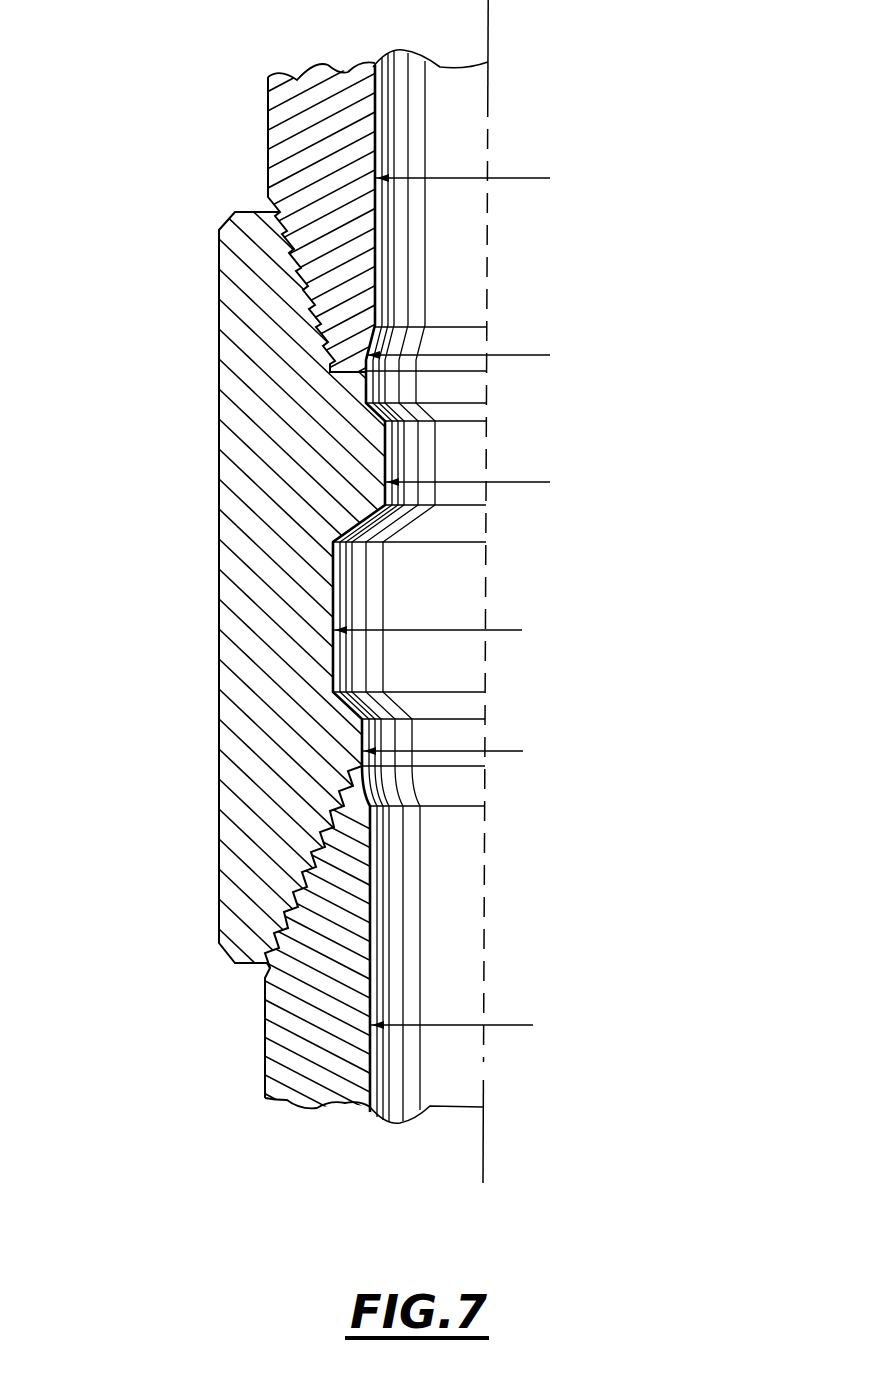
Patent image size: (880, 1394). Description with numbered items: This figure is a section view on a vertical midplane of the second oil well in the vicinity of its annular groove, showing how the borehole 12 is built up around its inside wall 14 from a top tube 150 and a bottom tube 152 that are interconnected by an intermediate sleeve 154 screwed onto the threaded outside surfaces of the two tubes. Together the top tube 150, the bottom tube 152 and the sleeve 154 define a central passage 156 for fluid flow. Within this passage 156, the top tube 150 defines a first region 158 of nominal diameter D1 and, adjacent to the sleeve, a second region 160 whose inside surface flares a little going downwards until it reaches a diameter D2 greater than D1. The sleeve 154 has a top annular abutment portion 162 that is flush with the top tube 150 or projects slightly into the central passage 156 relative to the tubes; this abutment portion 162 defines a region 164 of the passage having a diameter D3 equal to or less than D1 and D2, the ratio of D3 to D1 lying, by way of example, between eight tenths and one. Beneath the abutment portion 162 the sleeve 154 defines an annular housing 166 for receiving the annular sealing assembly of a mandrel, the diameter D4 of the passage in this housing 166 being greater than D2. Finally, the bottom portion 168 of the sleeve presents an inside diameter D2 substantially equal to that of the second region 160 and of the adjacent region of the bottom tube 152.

The borehole 12 is at (172, 53).
The inside wall 14 is at (378, 97).
The top tube 150 is at (302, 158).
The bottom tube 152 is at (275, 1042).
The intermediate sleeve 154 is at (258, 507).
The central passage 156 is at (442, 28).
The first region 158 is at (497, 328).
The second region 160 is at (497, 322).
The top annular abutment portion 162 is at (385, 450).
The region 164 is at (497, 386).
The annular housing 166 is at (345, 598).
The bottom portion 168 is at (358, 745).